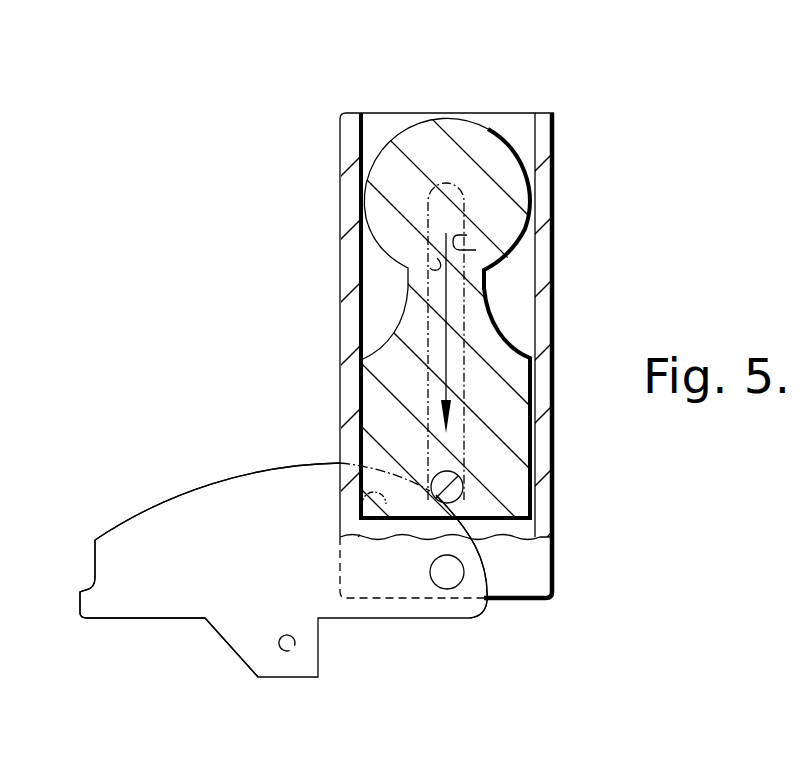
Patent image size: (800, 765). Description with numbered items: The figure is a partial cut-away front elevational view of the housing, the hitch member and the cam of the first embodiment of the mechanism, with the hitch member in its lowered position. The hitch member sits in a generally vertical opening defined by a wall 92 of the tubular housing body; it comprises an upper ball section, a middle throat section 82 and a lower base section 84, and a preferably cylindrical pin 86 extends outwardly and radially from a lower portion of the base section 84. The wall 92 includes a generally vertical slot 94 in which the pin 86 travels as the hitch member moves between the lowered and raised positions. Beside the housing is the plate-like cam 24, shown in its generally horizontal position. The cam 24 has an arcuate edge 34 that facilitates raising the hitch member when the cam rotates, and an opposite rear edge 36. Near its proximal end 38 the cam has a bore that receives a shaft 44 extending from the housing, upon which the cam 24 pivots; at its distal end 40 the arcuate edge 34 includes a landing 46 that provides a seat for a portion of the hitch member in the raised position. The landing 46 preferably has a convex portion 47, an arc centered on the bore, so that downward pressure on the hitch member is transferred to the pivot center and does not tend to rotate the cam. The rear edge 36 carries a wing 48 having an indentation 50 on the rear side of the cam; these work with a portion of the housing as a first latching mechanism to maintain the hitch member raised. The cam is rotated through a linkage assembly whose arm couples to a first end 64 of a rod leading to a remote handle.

The cam 24 is at (188, 518).
The arcuate edge 34 is at (223, 478).
The rear edge 36 is at (127, 620).
The proximal end 38 is at (468, 607).
The distal end 40 is at (90, 607).
The shaft 44 is at (447, 572).
The landing 46 is at (92, 583).
The convex portion 47 is at (93, 539).
The wing 48 is at (237, 627).
The indentation 50 is at (293, 650).
The first end of the rod 64 is at (472, 133).
The middle throat section 82 is at (415, 312).
The lower base section 84 is at (513, 423).
The pin 86 is at (447, 489).
The wall 92 is at (348, 341).
The vertical slot 94 is at (437, 258).